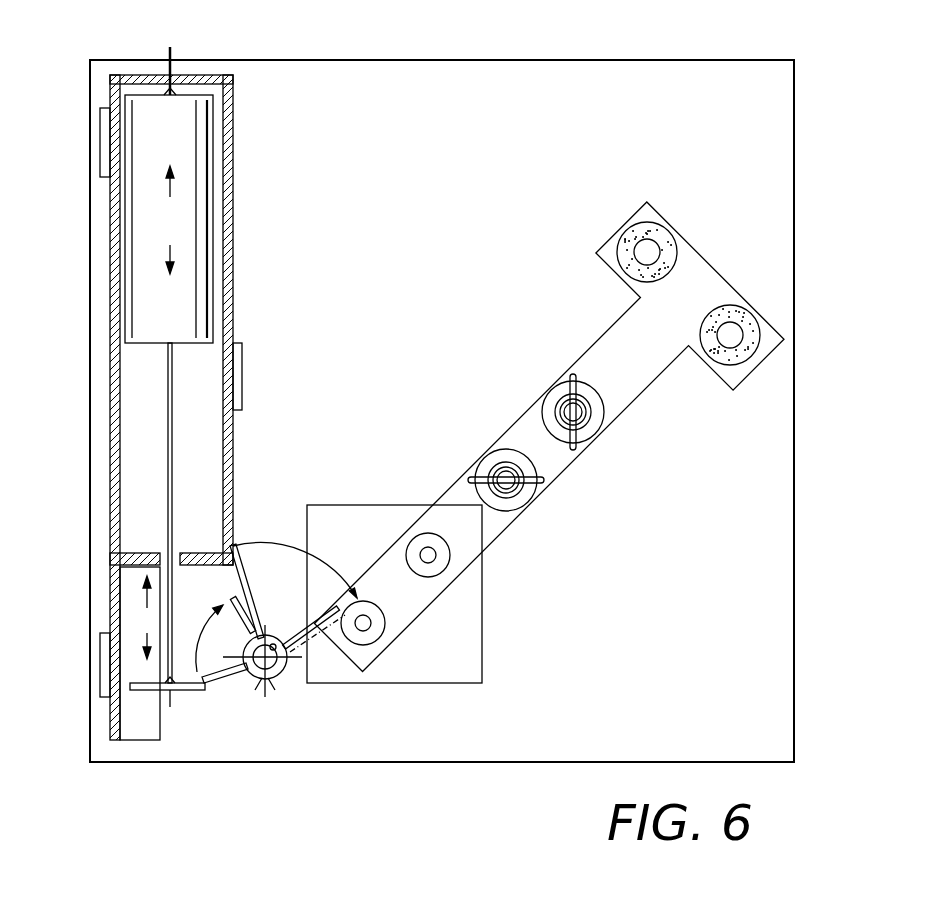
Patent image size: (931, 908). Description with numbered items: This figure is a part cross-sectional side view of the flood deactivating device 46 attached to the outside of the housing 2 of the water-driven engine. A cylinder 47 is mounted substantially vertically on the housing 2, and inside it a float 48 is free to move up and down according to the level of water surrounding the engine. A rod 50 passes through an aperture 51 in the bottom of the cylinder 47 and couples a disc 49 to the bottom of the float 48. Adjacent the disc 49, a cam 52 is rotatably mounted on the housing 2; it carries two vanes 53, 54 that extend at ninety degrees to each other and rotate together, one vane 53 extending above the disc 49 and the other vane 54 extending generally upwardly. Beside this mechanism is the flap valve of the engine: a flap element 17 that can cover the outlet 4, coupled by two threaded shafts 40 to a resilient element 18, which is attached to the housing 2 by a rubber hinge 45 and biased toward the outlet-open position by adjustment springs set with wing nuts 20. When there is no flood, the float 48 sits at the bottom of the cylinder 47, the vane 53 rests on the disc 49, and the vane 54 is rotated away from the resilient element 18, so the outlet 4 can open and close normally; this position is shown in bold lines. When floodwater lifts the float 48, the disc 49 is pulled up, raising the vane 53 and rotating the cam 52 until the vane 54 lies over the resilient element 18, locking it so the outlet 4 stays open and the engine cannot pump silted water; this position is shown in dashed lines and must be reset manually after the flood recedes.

The housing 2 is at (517, 58).
The flood deactivating device 46 is at (578, 128).
The cylinder 47 is at (230, 240).
The float 48 is at (202, 168).
The rod 50 is at (170, 438).
The disc 49 is at (152, 692).
The aperture 51 is at (177, 550).
The vane 53 is at (234, 678).
The cam 52 is at (278, 675).
The vane 54 is at (270, 539).
The flap element 17 is at (457, 668).
The outlet 4 is at (360, 527).
The resilient element 18 is at (503, 540).
The threaded shafts 40 is at (372, 628).
The wing nuts 20 is at (481, 462).
The rubber hinge 45 is at (653, 233).